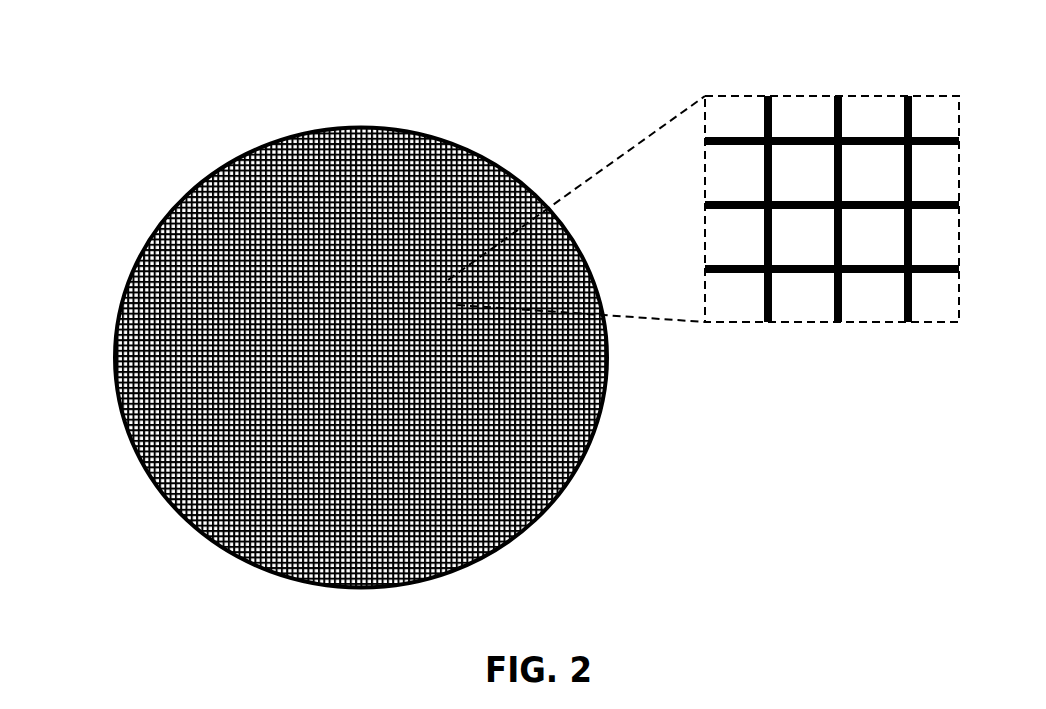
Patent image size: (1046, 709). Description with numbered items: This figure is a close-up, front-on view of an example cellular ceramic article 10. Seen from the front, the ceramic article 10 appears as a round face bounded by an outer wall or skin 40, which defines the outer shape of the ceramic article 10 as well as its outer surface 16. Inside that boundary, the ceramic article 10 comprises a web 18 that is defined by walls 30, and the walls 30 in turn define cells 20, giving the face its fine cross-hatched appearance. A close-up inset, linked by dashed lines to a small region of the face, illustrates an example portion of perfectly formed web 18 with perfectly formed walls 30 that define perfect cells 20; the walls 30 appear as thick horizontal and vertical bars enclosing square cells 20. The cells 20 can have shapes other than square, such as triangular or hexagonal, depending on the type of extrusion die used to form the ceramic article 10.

The cellular ceramic article 10 is at (178, 158).
The outer surface 16 is at (608, 373).
The web 18 is at (896, 74).
The cells 20 is at (866, 115).
The walls 30 is at (765, 117).
The outer wall or skin 40 is at (355, 128).